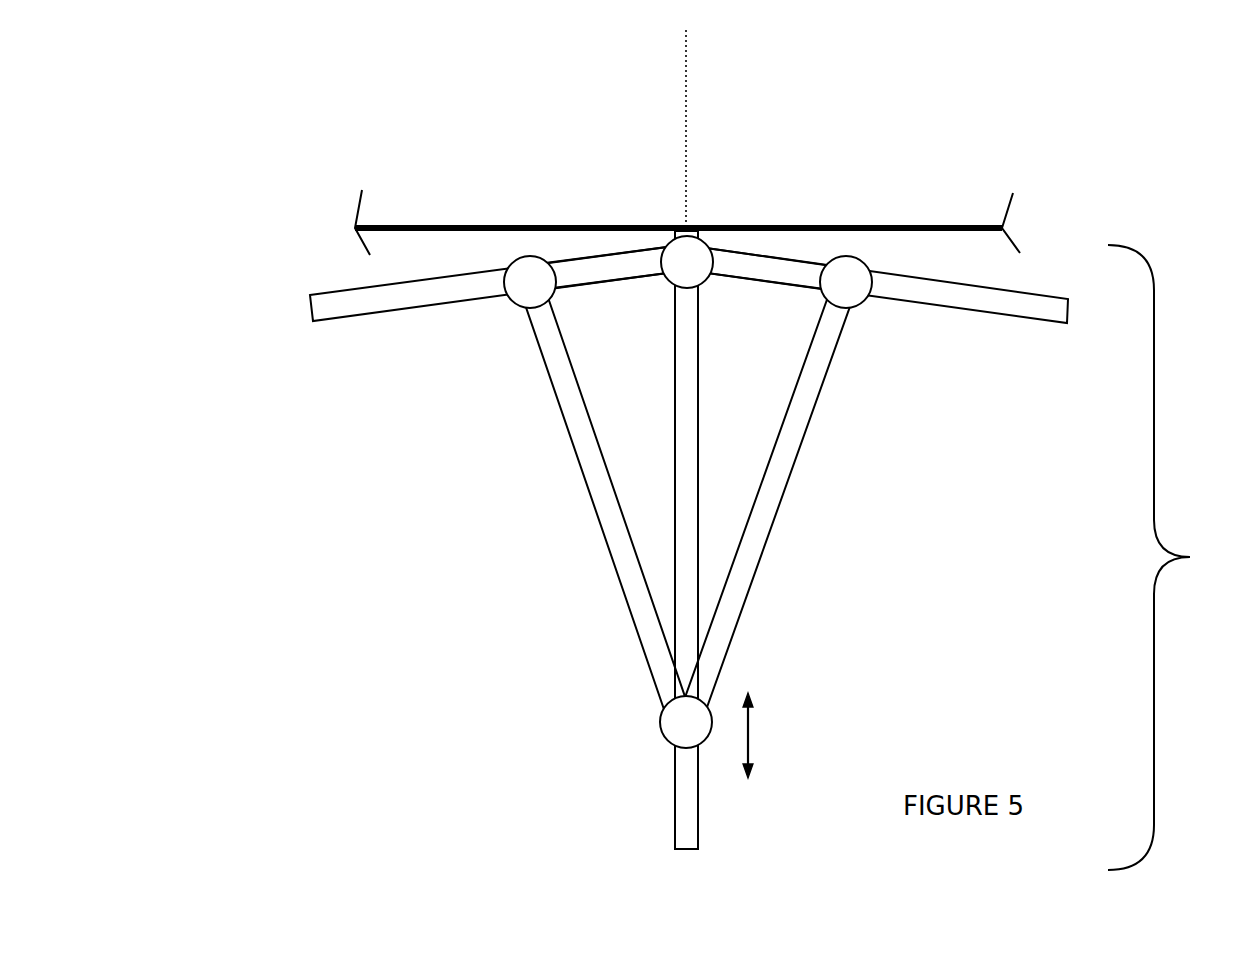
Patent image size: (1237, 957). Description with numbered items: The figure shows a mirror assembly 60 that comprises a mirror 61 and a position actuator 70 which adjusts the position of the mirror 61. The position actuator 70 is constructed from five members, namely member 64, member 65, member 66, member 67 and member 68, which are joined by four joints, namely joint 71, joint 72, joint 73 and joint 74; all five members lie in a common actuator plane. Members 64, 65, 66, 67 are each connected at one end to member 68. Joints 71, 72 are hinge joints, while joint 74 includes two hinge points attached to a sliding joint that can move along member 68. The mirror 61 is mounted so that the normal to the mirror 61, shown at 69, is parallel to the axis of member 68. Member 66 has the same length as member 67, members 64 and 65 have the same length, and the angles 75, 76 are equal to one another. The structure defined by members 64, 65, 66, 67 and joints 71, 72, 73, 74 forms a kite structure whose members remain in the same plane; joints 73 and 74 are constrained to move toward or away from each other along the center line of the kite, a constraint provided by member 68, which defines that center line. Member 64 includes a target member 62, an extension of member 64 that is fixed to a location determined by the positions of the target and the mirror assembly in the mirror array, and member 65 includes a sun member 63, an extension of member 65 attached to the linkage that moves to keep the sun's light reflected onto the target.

The mirror assembly 60 is at (246, 133).
The mirror 61 is at (918, 225).
The target member 62 is at (965, 302).
The sun member 63 is at (407, 302).
The first member 64 is at (745, 268).
The second member 65 is at (638, 273).
The third member 66 is at (587, 453).
The fourth member 67 is at (787, 455).
The member 68 is at (680, 795).
The normal to mirror 69 is at (686, 100).
The position actuator 70 is at (1172, 557).
The hinge joint 71 is at (846, 282).
The hinge joint 72 is at (530, 282).
The joint 73 is at (687, 262).
The joint 74 is at (687, 722).
The angle 75 is at (585, 283).
The angle 76 is at (788, 283).